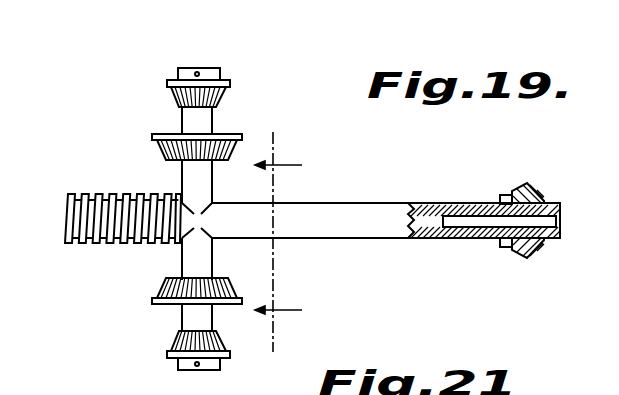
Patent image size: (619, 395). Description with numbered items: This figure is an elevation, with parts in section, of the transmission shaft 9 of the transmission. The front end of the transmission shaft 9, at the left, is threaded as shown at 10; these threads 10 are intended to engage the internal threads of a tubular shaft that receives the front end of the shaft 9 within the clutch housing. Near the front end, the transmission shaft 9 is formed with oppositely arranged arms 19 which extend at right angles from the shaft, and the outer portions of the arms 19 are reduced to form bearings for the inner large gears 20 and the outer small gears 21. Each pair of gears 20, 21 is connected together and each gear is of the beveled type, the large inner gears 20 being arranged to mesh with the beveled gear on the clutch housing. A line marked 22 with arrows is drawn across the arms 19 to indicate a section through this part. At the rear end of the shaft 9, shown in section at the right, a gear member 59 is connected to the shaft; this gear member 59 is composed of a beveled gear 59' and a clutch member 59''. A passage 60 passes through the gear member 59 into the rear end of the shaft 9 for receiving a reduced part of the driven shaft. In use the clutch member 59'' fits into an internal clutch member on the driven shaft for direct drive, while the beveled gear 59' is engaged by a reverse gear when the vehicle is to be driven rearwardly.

The transmission shaft 9 is at (352, 233).
The threads 10 is at (115, 244).
The arms 19 is at (182, 168).
The inner large gears 20 is at (241, 133).
The outer small gears 21 is at (230, 82).
The section line 22 is at (278, 247).
The gear member 59 is at (537, 174).
The beveled gear 59' is at (523, 264).
The clutch member 59'' is at (574, 205).
The passage 60 is at (468, 221).